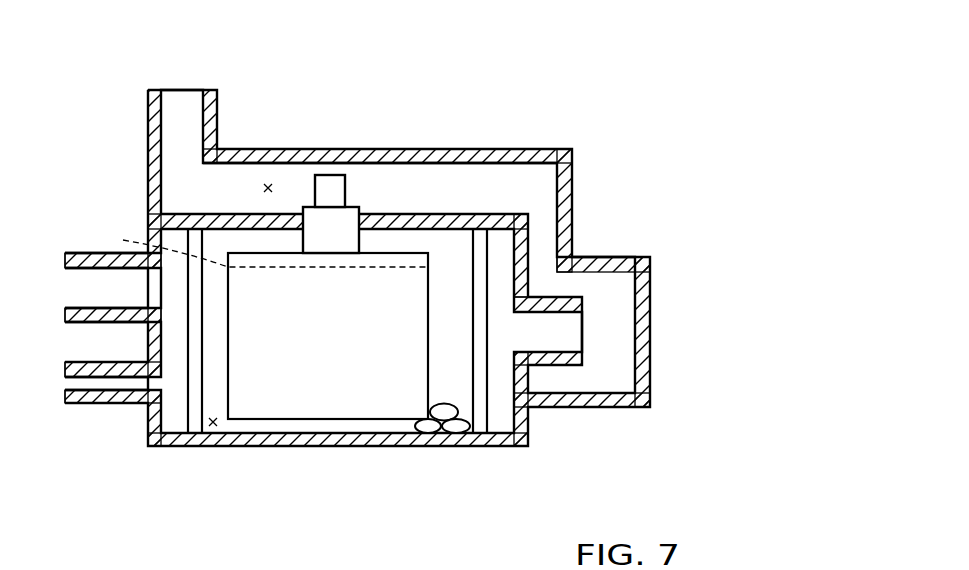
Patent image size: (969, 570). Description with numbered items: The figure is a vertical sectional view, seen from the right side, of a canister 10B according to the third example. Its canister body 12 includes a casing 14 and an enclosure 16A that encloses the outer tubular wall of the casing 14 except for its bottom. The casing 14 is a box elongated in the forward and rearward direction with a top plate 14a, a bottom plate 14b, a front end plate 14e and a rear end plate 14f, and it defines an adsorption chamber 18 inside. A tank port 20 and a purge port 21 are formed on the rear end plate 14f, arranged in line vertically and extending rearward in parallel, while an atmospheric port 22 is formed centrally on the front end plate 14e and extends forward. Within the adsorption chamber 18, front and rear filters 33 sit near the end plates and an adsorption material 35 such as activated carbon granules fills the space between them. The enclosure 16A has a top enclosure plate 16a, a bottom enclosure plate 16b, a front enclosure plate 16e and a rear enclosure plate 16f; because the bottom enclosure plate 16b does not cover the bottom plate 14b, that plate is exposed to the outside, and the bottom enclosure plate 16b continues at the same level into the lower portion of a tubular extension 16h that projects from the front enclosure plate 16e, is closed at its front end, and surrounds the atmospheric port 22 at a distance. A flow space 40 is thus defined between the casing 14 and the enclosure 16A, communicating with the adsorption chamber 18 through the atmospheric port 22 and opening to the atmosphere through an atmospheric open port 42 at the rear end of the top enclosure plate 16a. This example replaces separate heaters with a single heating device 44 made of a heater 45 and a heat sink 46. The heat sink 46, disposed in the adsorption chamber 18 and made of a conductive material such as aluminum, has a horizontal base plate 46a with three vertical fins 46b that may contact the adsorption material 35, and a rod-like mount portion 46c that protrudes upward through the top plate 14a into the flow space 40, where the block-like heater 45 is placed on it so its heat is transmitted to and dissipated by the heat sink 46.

The canister 10B is at (541, 73).
The canister body 12 is at (486, 128).
The casing 14 is at (146, 226).
The top plate 14a is at (243, 222).
The bottom plate 14b is at (398, 438).
The front end plate 14e is at (521, 413).
The rear end plate 14f is at (150, 415).
The enclosure 16A is at (444, 148).
The top enclosure plate 16a is at (330, 174).
The bottom enclosure plate 16b is at (556, 408).
The front enclosure plate 16e is at (563, 212).
The rear enclosure plate 16f is at (152, 198).
The tubular extension 16h is at (611, 398).
The adsorption chamber 18 is at (214, 426).
The tank port 20 is at (80, 252).
The purge port 21 is at (88, 398).
The atmospheric port 22 is at (567, 305).
The filter 33 is at (193, 422).
The adsorption material 35 is at (431, 430).
The flow space 40 is at (270, 186).
The atmospheric open port 42 is at (152, 116).
The heating device 44 is at (353, 189).
The heater 45 is at (318, 182).
The heat sink 46 is at (265, 400).
The base plate 46a is at (253, 242).
The fin 46b is at (333, 405).
The mount portion 46c is at (323, 243).